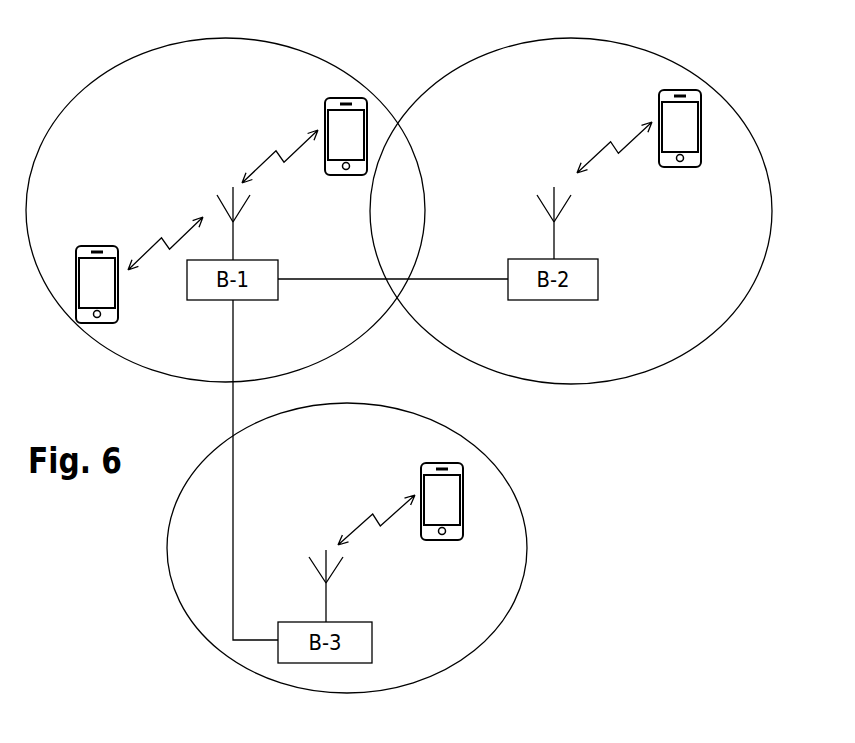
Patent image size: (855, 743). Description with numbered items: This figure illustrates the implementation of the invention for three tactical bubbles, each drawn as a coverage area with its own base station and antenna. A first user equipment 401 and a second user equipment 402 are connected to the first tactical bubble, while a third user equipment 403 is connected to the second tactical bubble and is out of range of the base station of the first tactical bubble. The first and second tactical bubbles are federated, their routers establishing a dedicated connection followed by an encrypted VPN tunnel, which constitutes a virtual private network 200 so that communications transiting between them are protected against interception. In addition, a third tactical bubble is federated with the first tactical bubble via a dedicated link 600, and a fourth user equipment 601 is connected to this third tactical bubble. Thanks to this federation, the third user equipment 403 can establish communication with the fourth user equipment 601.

The virtual private network 200 is at (366, 280).
The first user equipment 401 is at (98, 245).
The second user equipment 402 is at (325, 103).
The third user equipment 403 is at (678, 90).
The dedicated link 600 is at (232, 410).
The fourth user equipment 601 is at (442, 542).